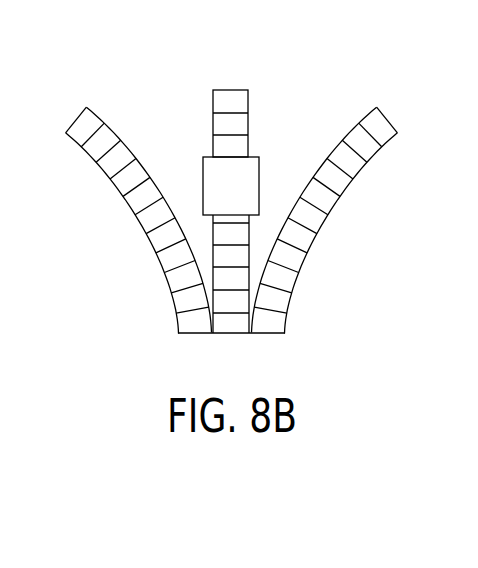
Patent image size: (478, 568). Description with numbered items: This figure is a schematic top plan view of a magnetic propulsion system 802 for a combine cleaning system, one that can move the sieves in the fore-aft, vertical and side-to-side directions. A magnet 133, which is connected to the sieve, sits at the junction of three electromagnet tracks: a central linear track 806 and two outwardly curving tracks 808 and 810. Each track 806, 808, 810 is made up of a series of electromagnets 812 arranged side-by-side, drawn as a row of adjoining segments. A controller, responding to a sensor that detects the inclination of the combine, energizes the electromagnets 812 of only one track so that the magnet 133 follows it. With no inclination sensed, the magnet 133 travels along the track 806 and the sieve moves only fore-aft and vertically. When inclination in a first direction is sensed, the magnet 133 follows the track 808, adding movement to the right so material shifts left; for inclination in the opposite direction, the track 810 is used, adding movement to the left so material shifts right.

The magnetic propulsion system 802 is at (309, 97).
The linear track 806 is at (230, 88).
The magnet 133 is at (260, 188).
The linear track 808 is at (75, 117).
The linear track 810 is at (378, 108).
The electromagnets 812 is at (222, 127).